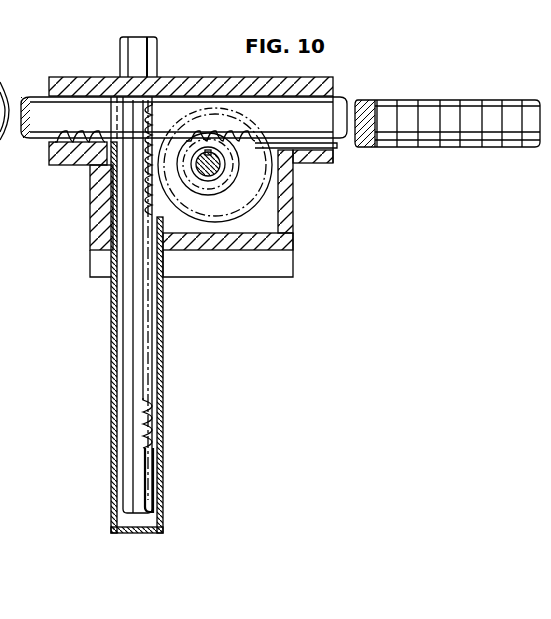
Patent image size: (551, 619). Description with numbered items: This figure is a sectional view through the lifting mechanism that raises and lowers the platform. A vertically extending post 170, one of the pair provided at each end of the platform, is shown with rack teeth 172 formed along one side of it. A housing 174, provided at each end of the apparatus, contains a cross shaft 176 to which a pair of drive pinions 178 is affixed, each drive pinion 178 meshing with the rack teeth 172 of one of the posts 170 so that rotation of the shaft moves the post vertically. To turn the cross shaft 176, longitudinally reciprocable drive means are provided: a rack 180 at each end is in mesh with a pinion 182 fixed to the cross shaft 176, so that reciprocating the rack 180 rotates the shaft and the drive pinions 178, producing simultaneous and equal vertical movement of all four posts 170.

The post 170 is at (158, 50).
The rack teeth 172 is at (146, 415).
The housing 174 is at (295, 228).
The cross shaft 176 is at (197, 160).
The drive pinion 178 is at (239, 225).
The rack 180 is at (340, 102).
The pinion 182 is at (240, 170).